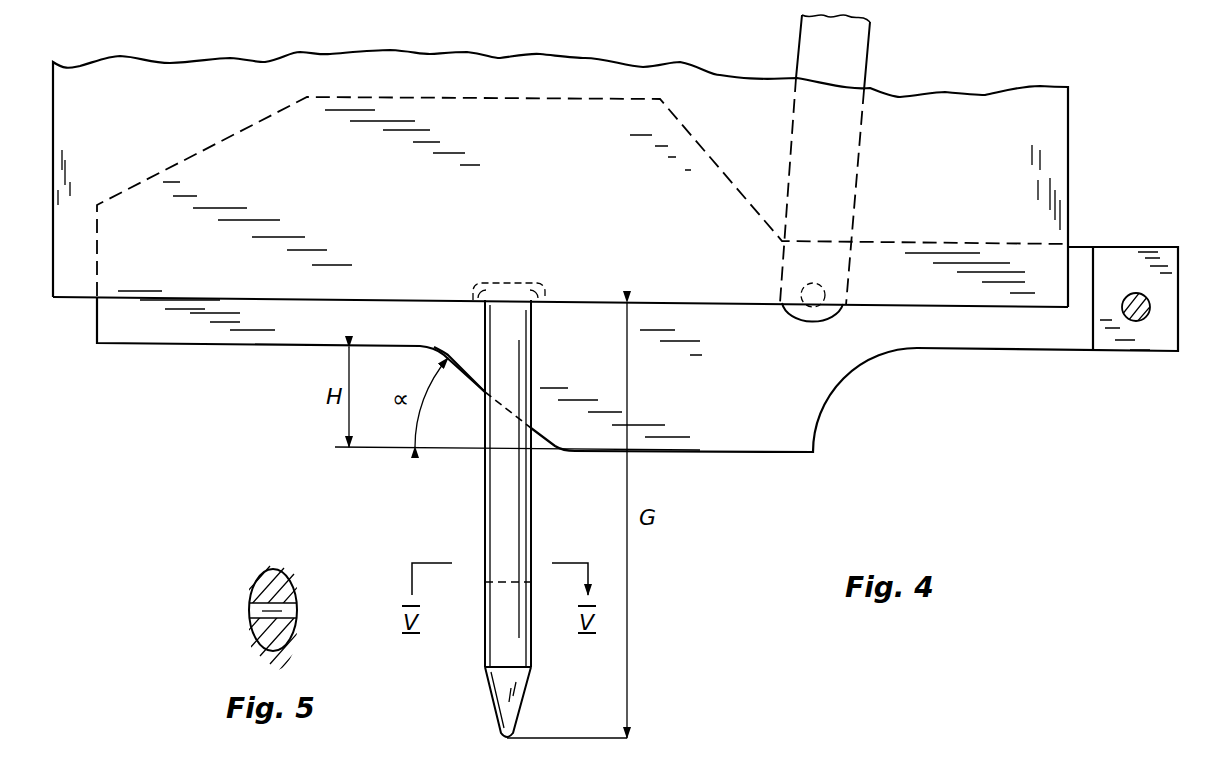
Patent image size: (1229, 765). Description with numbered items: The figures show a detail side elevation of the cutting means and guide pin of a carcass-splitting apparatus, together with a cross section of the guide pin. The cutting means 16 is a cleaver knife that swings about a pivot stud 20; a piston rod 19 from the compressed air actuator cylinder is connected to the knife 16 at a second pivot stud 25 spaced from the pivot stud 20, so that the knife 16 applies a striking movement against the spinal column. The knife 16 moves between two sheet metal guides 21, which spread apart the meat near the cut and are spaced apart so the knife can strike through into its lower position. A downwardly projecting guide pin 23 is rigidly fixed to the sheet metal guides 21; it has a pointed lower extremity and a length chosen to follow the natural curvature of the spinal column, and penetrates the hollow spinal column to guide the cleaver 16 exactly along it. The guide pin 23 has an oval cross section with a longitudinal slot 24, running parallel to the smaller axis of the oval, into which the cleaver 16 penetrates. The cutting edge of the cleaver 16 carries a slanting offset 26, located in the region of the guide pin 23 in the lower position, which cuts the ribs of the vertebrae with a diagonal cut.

In FIG. 4, the cutting means 16 is at (496, 112).
In FIG. 4, the piston rod 19 is at (840, 70).
In FIG. 4, the pivot stud 20 is at (1131, 291).
In FIG. 4, the sheet metal guides 21 is at (76, 291).
In FIG. 4, the guide pin 23 is at (492, 636).
In FIG. 5, the guide pin 23 is at (284, 583).
In FIG. 5, the longitudinal slot 24 is at (252, 611).
In FIG. 4, the pivot stud 25 is at (810, 284).
In FIG. 4, the slanting offset 26 is at (476, 385).